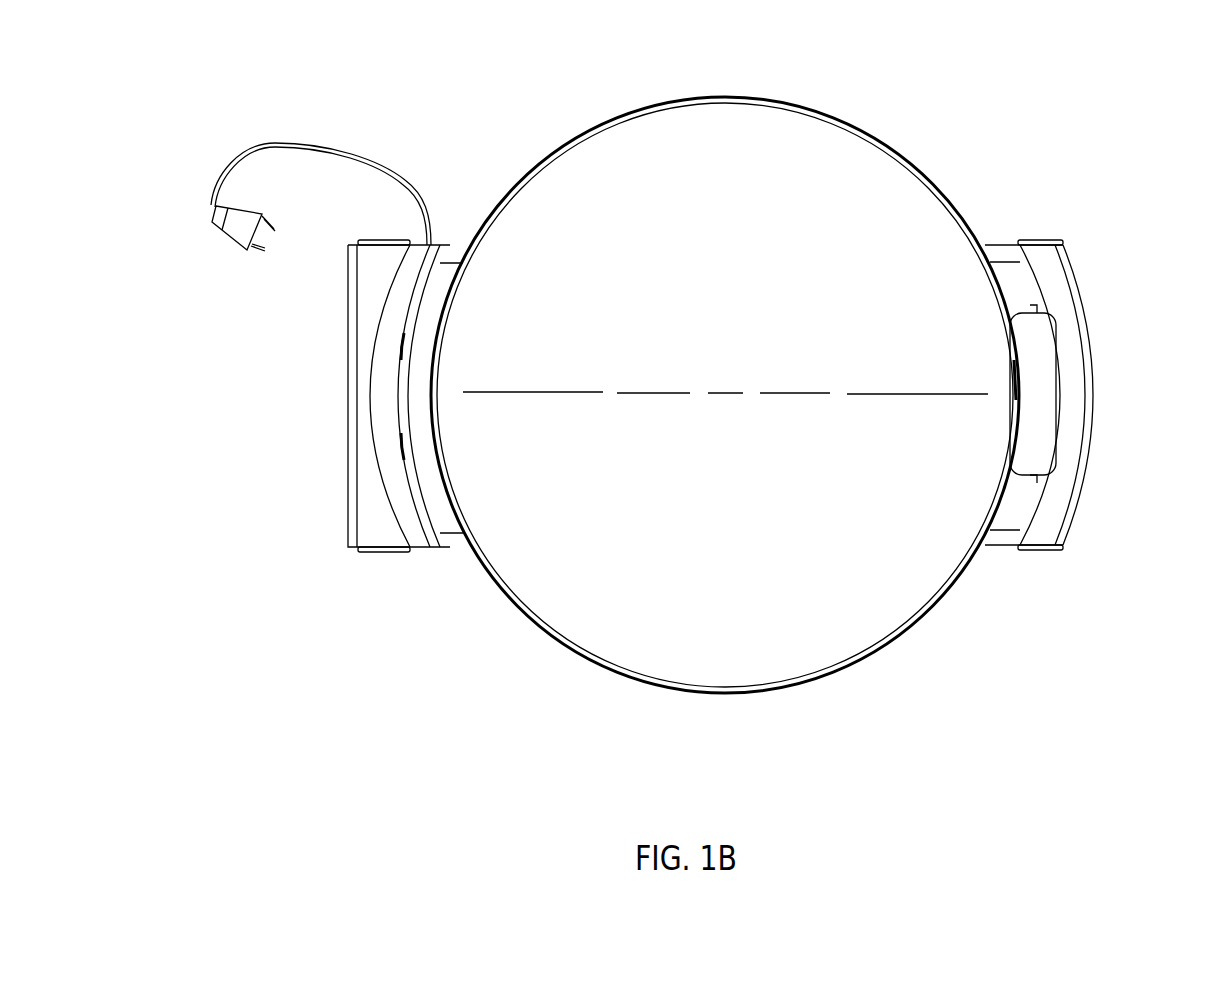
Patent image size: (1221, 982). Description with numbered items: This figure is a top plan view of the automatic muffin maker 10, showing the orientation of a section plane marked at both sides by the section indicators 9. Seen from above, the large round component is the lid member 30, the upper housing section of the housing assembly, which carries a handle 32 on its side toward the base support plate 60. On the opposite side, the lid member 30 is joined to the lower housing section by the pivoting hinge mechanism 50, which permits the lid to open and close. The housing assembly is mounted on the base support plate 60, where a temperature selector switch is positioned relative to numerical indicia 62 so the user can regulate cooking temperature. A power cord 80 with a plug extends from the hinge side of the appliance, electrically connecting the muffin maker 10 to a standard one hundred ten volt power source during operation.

The automatic muffin maker 10 is at (538, 72).
The lid member 30 is at (750, 242).
The handle 32 is at (1028, 346).
The pivoting hinge mechanism 50 is at (318, 480).
The base support plate 60 is at (1027, 210).
The numerical indicia 62 is at (1087, 347).
The power cord 80 is at (207, 178).
The section line 9- 9 is at (290, 362).